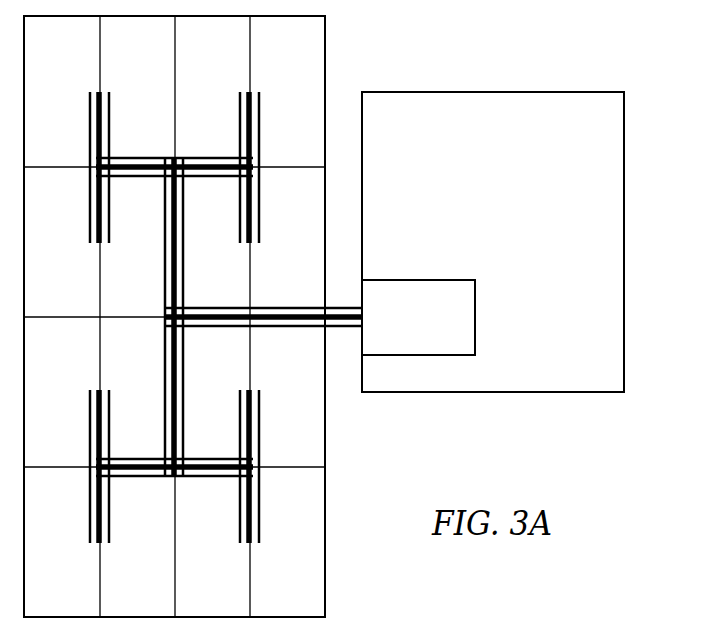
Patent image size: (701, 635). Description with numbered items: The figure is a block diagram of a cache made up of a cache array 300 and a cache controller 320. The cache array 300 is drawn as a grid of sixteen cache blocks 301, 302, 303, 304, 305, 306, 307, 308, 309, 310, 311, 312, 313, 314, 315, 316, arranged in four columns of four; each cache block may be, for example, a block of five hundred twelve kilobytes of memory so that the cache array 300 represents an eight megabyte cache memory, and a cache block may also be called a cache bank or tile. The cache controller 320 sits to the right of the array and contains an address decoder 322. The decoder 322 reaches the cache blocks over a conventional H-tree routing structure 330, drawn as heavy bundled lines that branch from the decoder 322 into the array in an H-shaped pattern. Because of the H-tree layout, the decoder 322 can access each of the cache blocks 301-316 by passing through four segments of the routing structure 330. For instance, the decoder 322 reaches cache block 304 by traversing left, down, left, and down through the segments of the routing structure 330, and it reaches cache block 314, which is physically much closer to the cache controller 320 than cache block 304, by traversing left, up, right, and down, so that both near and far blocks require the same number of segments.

The cache array 300 is at (325, 597).
The cache block 301 is at (78, 85).
The cache block 302 is at (78, 273).
The cache block 303 is at (78, 385).
The cache block 304 is at (78, 573).
The cache block 305 is at (154, 85).
The cache block 306 is at (154, 273).
The cache block 307 is at (154, 385).
The cache block 308 is at (154, 573).
The cache block 309 is at (229, 85).
The cache block 310 is at (229, 273).
The cache block 311 is at (229, 385).
The cache block 312 is at (229, 573).
The cache block 313 is at (304, 85).
The cache block 314 is at (304, 273).
The cache block 315 is at (304, 385).
The cache block 316 is at (304, 573).
The cache controller 320 is at (572, 92).
The address decoder 322 is at (475, 318).
The H-tree routing structure 330 is at (272, 449).